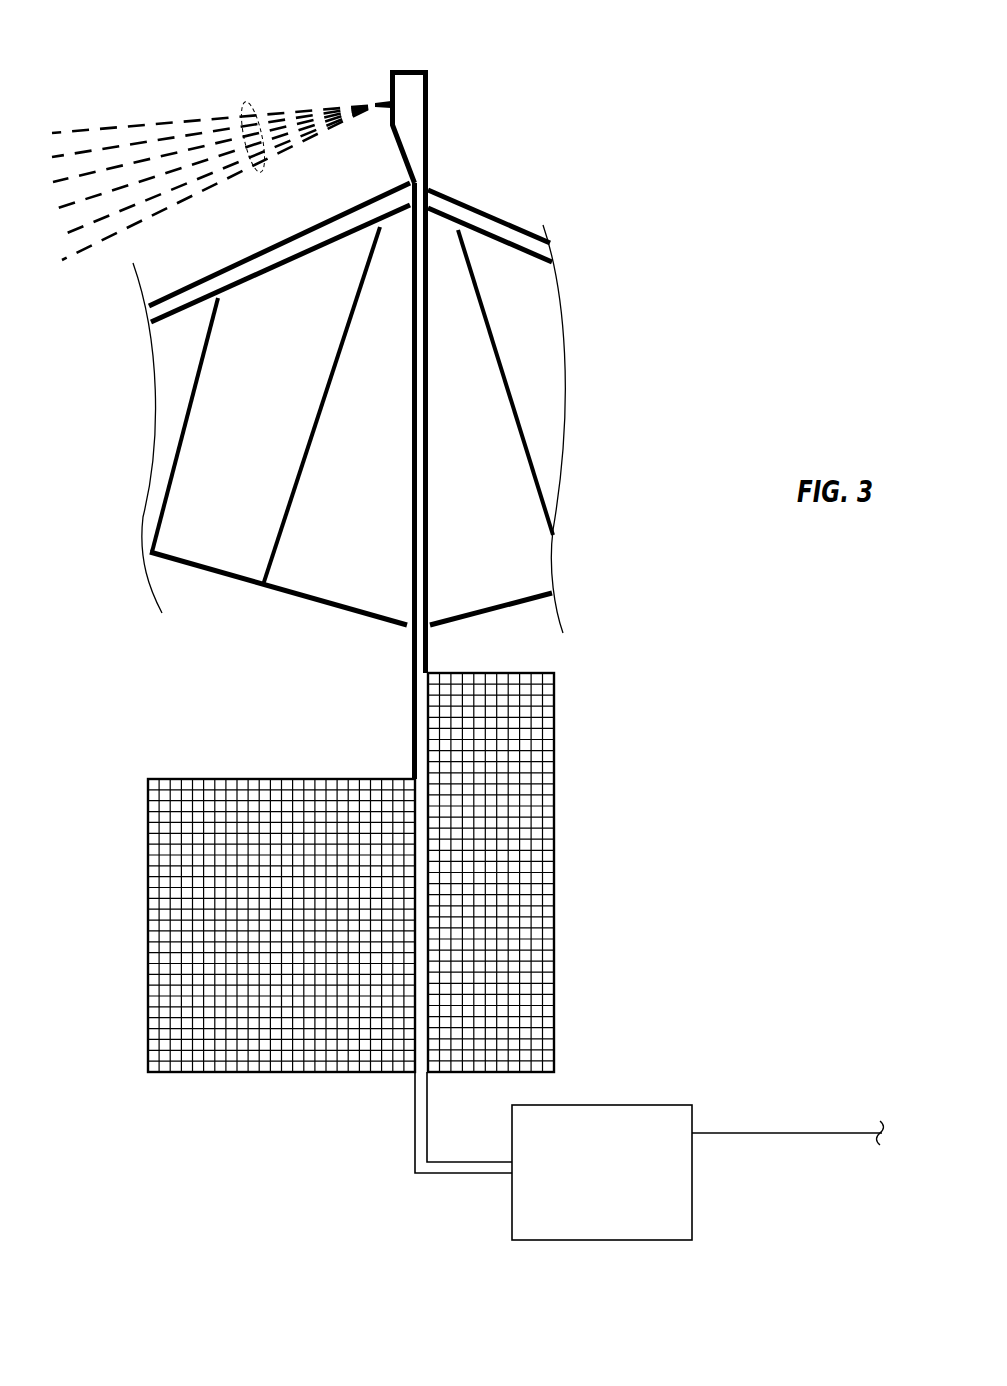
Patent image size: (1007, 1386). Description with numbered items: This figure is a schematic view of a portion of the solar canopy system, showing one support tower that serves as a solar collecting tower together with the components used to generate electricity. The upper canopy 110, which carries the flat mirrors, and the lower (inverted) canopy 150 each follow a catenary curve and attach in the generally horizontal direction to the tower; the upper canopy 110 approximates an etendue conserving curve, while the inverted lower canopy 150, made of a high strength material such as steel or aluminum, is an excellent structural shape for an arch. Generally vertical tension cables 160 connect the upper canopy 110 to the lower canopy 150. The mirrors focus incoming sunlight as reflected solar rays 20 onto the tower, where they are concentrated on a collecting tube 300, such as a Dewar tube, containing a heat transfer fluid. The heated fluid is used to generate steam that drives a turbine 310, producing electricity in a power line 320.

The reflected solar rays 20 is at (243, 103).
The collecting tube 300 is at (430, 447).
The upper canopy 110 is at (490, 220).
The tension cables 160 is at (527, 470).
The lower canopy 150 is at (377, 620).
The turbine 310 is at (620, 1184).
The power line 320 is at (785, 1133).